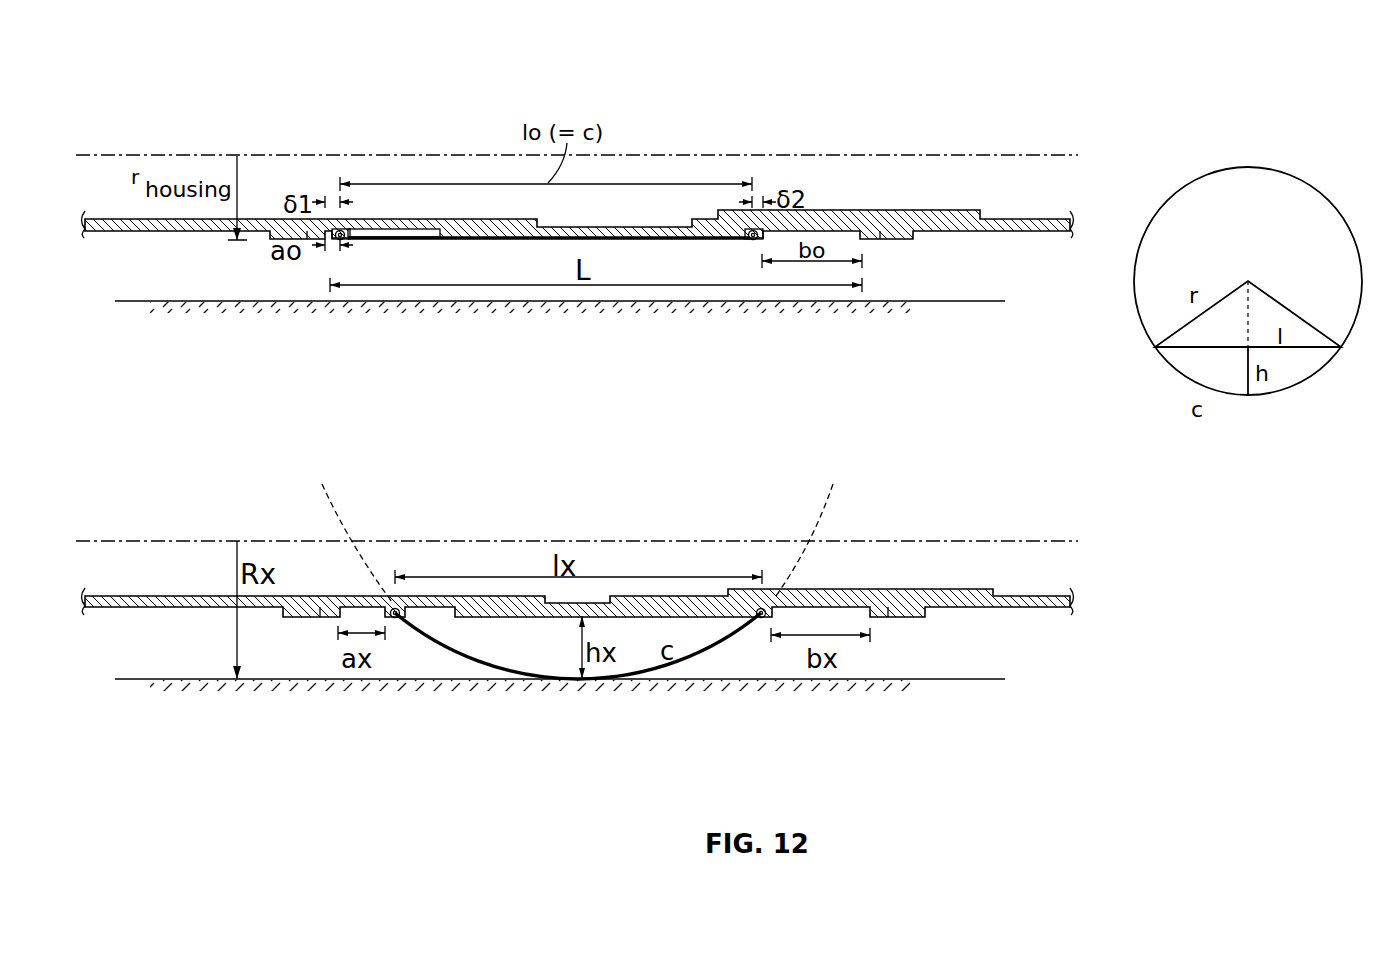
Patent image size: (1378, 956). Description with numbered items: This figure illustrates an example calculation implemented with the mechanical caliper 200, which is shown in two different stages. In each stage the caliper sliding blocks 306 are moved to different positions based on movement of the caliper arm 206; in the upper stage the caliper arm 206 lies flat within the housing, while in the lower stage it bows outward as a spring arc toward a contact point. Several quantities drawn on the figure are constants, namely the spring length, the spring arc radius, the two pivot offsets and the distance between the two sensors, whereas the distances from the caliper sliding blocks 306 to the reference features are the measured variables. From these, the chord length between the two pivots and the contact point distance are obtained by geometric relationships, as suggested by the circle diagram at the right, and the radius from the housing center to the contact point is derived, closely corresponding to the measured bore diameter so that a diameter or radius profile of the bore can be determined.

The mechanical caliper 200 is at (929, 76).
The caliper arm 206 is at (640, 236).
The caliper sliding blocks 306 is at (343, 231).